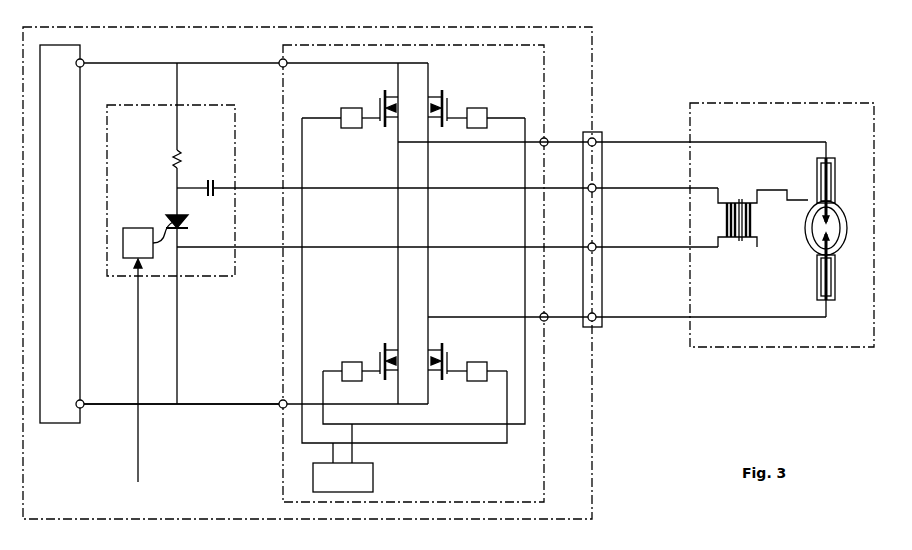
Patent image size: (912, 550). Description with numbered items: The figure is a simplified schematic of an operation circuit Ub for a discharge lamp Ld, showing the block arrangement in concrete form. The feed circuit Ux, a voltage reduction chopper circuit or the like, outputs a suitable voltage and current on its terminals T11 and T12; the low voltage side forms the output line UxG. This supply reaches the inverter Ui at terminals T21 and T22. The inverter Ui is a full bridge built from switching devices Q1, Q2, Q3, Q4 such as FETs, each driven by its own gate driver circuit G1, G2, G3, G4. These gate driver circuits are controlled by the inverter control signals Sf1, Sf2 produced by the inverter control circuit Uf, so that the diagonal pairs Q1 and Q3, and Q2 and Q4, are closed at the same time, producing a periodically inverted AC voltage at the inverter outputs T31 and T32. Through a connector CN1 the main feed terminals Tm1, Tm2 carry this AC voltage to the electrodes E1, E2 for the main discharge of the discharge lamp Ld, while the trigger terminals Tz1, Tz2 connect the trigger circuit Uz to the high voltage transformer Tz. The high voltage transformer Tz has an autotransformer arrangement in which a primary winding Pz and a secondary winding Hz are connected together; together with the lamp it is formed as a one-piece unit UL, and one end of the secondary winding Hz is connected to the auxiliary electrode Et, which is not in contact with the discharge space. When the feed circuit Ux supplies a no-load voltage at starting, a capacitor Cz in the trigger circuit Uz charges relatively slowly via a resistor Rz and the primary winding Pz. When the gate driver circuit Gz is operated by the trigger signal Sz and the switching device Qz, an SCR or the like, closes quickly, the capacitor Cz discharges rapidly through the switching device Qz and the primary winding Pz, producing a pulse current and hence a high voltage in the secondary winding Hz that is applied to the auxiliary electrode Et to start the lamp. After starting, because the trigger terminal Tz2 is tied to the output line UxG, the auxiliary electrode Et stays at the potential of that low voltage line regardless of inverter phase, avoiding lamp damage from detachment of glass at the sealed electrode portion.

The operation circuit Ub is at (592, 483).
The inverter Ui is at (281, 489).
The trigger circuit Uz is at (214, 277).
The one-piece unit UL is at (838, 347).
The feed circuit Ux is at (60, 234).
The output line on the low voltage side of the feed circuit UxG is at (214, 403).
The terminal T11 is at (83, 60).
The terminal T12 is at (84, 408).
The terminal T21 is at (280, 60).
The terminal T22 is at (281, 415).
The terminal T31 is at (546, 138).
The terminal T32 is at (546, 321).
The connector CN1 is at (594, 130).
The main feed terminal Tm1 is at (596, 146).
The main feed terminal Tm2 is at (596, 314).
The trigger terminal Tz1 is at (596, 192).
The trigger terminal Tz2 is at (596, 251).
The resistor Rz is at (174, 160).
The capacitor Cz is at (210, 178).
The switching device Qz is at (172, 218).
The gate driver circuit Gz is at (148, 240).
The trigger signal Sz is at (140, 446).
The switching device Q1 is at (382, 96).
The switching device Q2 is at (382, 349).
The switching device Q3 is at (448, 349).
The switching device Q4 is at (448, 96).
The gate driver circuit G1 is at (342, 108).
The gate driver circuit G2 is at (344, 361).
The gate driver circuit G3 is at (484, 361).
The gate driver circuit G4 is at (484, 108).
The inverter control signal Sf1 is at (304, 280).
The inverter control signal Sf2 is at (522, 284).
The inverter control circuit Uf is at (343, 477).
The high voltage transformer Tz is at (734, 202).
The primary winding Pz is at (725, 219).
The secondary winding Hz is at (752, 217).
The discharge lamp Ld is at (815, 197).
The electrode for the main discharge E1 is at (828, 220).
The electrode for the main discharge E2 is at (832, 244).
The auxiliary electrode Et is at (814, 255).